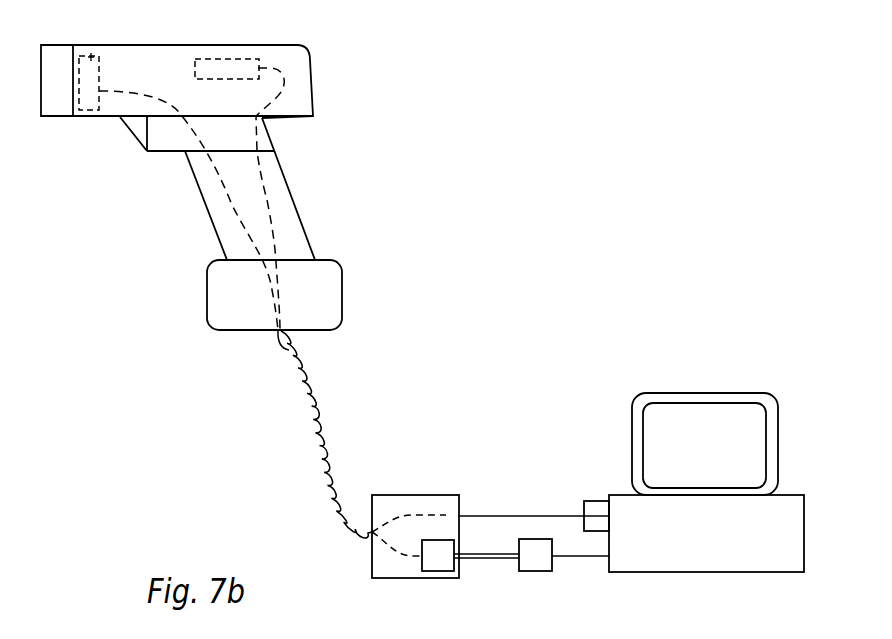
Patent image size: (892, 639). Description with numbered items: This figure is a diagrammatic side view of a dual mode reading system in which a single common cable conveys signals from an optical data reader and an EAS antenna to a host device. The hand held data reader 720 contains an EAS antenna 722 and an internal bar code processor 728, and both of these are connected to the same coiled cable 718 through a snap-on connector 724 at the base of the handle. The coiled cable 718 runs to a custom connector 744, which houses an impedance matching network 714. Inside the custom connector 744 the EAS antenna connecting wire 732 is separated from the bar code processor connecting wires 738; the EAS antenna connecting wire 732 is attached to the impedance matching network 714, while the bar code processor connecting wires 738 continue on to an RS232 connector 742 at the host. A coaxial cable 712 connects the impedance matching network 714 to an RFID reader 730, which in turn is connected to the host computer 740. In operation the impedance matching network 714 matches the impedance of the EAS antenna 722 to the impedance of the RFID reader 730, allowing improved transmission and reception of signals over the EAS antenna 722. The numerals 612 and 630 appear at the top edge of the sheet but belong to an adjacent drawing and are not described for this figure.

The hand held data reader 720 is at (314, 50).
The EAS antenna 722 is at (91, 46).
The internal bar code processor 728 is at (227, 58).
The EAS antenna connecting wire 732 is at (229, 200).
The bar code processor connecting wires 738 is at (268, 200).
The snap-on connector 724 is at (343, 286).
The coiled cable 718 is at (311, 418).
The custom connector 744 is at (387, 494).
The impedance matching network 714 is at (437, 572).
The coaxial cable 712 is at (498, 559).
The RFID reader 730 is at (544, 572).
The connector port 742 is at (597, 500).
The host computer 740 is at (805, 515).
The reference from adjacent figure 612 is at (518, 16).
The reference from adjacent figure 630 is at (556, 1).